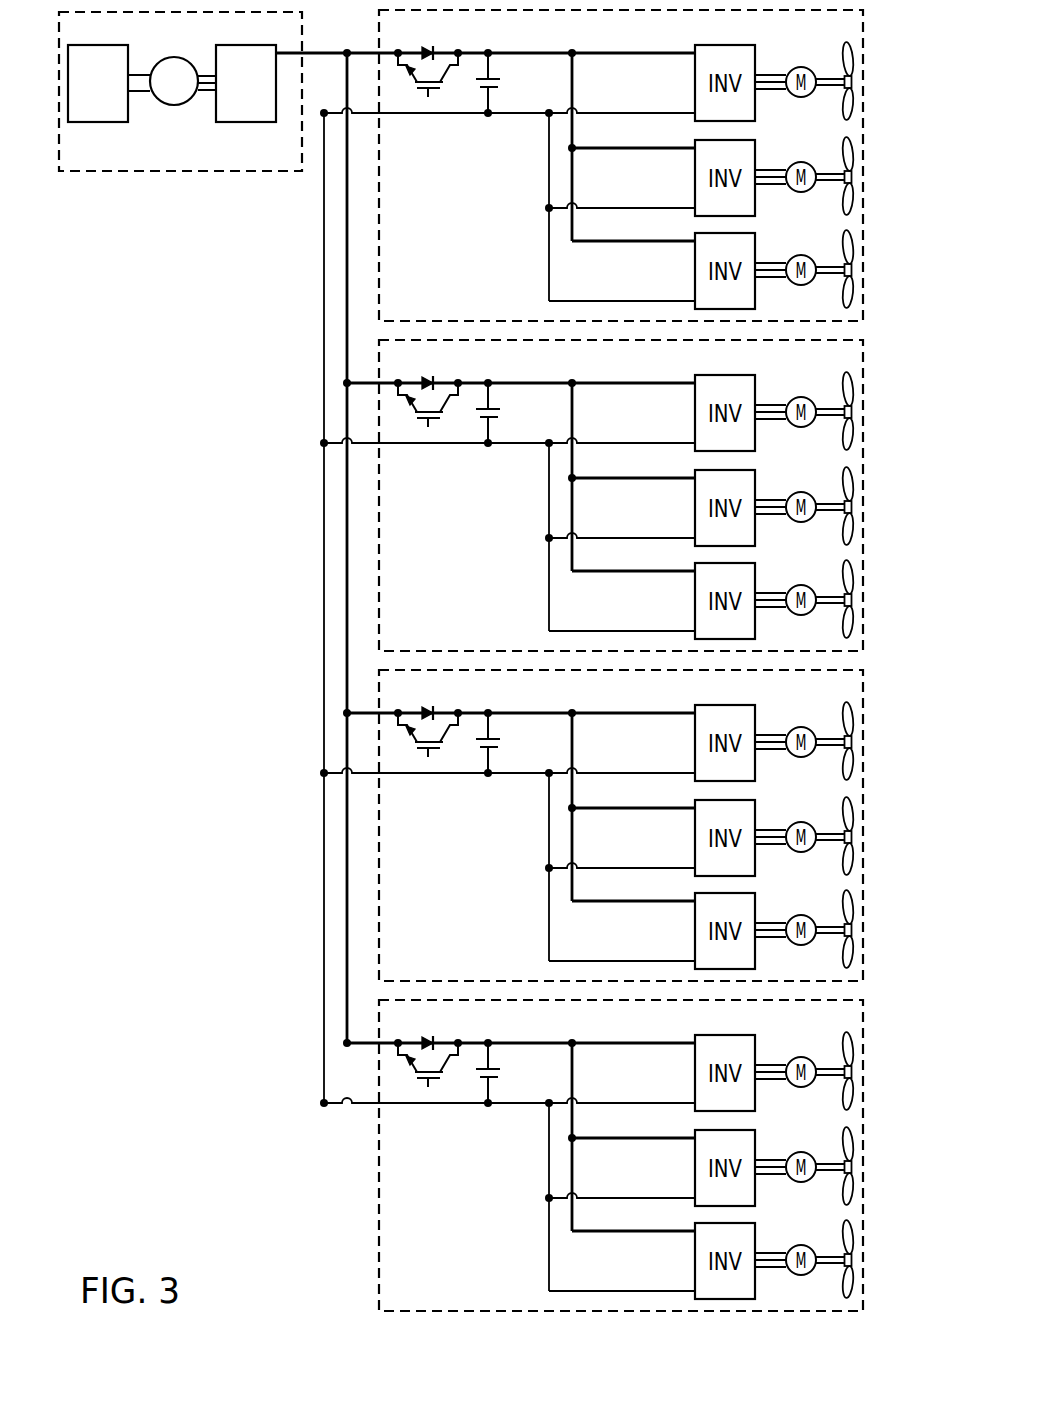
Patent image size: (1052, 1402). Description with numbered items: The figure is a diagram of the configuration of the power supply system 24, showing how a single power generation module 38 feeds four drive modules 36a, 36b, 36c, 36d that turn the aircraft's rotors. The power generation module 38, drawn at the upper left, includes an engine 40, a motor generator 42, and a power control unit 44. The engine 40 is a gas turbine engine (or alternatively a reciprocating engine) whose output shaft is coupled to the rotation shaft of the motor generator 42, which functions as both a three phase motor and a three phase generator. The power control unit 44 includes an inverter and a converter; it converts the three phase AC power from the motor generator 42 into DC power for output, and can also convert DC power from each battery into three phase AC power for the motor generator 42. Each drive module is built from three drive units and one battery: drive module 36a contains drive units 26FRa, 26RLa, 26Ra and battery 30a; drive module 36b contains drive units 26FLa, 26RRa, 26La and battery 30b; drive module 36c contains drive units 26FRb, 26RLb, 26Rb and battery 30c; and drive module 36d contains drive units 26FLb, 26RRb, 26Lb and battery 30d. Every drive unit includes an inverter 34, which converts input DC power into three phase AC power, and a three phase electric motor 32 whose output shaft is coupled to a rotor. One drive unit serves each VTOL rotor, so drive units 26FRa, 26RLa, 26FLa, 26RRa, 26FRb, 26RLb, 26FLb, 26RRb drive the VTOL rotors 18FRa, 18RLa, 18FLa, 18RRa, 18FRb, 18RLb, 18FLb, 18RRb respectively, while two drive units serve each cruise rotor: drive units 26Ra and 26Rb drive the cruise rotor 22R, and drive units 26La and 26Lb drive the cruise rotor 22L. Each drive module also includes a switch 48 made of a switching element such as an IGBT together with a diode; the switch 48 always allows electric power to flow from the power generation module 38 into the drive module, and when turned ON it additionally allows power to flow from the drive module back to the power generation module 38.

The power supply system 24 is at (192, 267).
The power generation module 38 is at (121, 172).
The engine 40 is at (100, 123).
The motor generator 42 is at (173, 106).
The power control unit 44 is at (246, 123).
The drive module 36a is at (379, 233).
The drive module 36b is at (564, 495).
The drive module 36c is at (564, 825).
The drive module 36d is at (564, 1155).
The battery 30a is at (502, 81).
The battery 30b is at (519, 413).
The battery 30c is at (518, 743).
The battery 30d is at (519, 1073).
The switch 48 is at (438, 48).
The inverter 34 is at (695, 93).
The electric motor 32 is at (795, 69).
The drive unit 26FRa is at (688, 73).
The drive unit 26RLa is at (688, 168).
The drive unit 26Ra is at (688, 261).
The drive unit 26FLa is at (509, 399).
The drive unit 26RRa is at (622, 494).
The drive unit 26La is at (622, 587).
The drive unit 26FRb is at (509, 729).
The drive unit 26RLb is at (622, 824).
The drive unit 26Rb is at (622, 917).
The drive unit 26FLb is at (509, 1059).
The drive unit 26RRb is at (622, 1154).
The drive unit 26Lb is at (622, 1247).
The VTOL rotor 18FRa is at (843, 45).
The VTOL rotor 18RLa is at (843, 140).
The VTOL rotor 18FLa is at (805, 397).
The VTOL rotor 18RRa is at (805, 492).
The VTOL rotor 18FRb is at (805, 727).
The VTOL rotor 18RLb is at (805, 822).
The VTOL rotor 18FLb is at (805, 1057).
The VTOL rotor 18RRb is at (805, 1152).
The cruise rotor 22R is at (842, 240).
The cruise rotor 22L is at (842, 570).